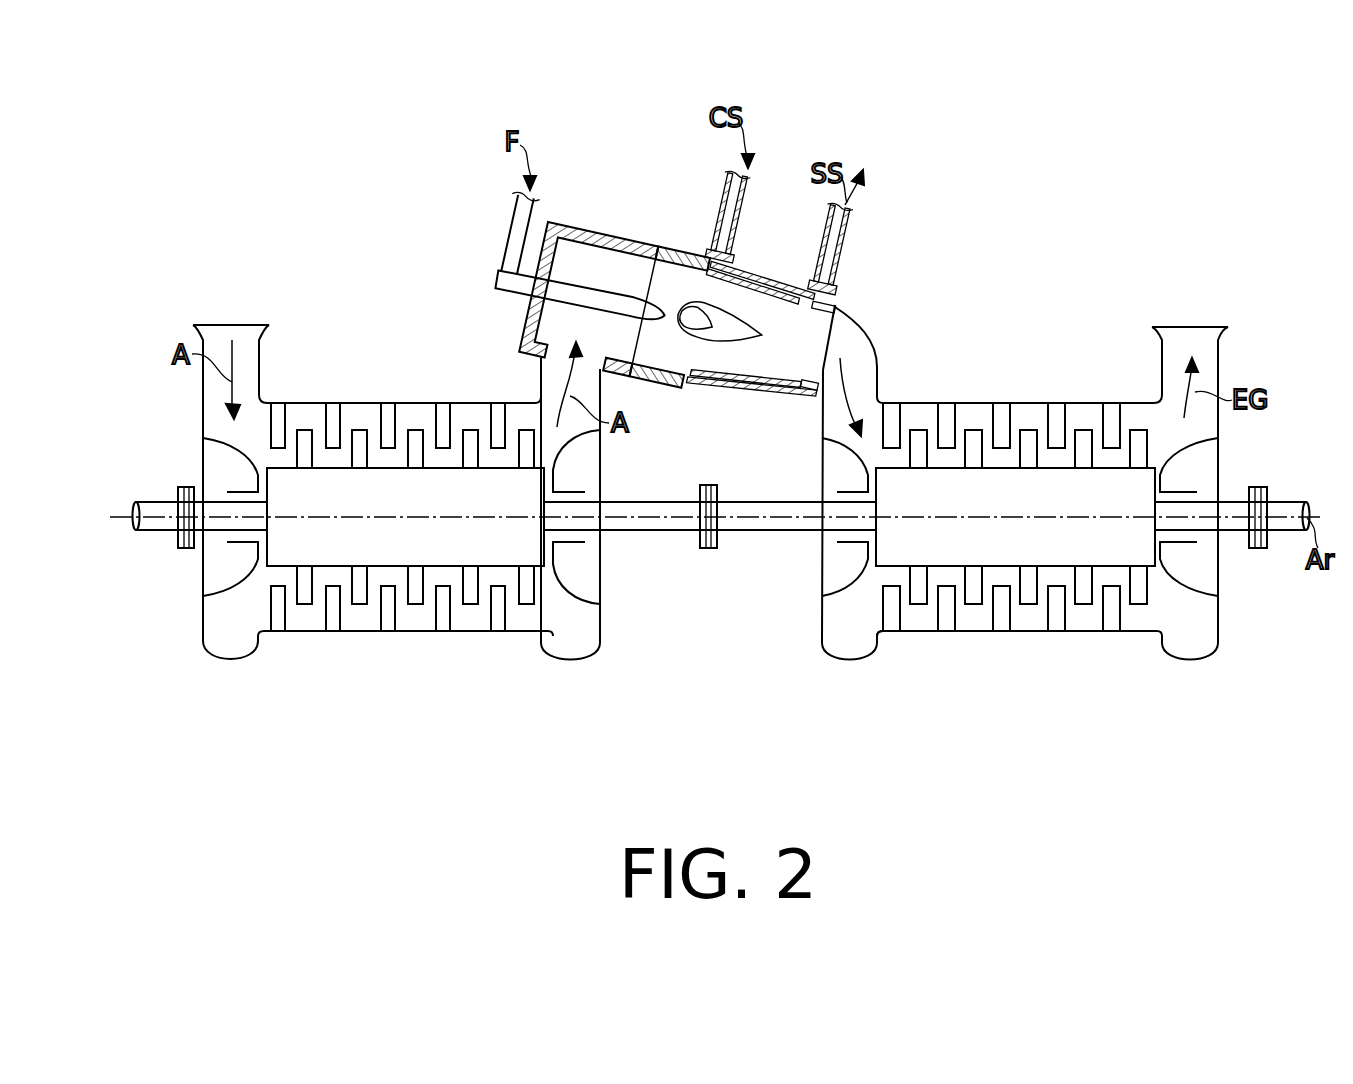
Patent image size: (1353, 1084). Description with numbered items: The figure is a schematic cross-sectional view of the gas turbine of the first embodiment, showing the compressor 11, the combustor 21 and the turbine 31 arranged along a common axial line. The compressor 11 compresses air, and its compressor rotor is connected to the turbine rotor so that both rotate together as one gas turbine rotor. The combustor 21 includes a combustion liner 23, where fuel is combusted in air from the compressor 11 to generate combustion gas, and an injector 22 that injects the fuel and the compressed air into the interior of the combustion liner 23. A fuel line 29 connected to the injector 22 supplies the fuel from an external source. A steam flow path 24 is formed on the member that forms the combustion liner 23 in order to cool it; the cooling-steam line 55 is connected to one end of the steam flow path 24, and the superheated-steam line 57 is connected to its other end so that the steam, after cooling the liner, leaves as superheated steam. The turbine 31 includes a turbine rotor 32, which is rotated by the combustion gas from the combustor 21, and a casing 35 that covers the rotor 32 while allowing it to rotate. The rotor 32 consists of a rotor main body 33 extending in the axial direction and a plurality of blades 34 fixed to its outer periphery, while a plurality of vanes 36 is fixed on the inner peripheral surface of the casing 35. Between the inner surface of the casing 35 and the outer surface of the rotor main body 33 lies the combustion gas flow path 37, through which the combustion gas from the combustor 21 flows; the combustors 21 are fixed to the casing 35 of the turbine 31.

The compressor 11 is at (410, 645).
The combustor 21 is at (478, 241).
The injector 22 is at (608, 230).
The combustion liner 23 is at (681, 245).
The steam flow path 24 is at (770, 283).
The fuel line 29 is at (514, 217).
The cooling-steam line 55 is at (748, 195).
The superheated-steam line 57 is at (858, 228).
The turbine 31 is at (1154, 678).
The turbine rotor 32 is at (910, 676).
The rotor main body 33 is at (1030, 545).
The blade 34 is at (918, 590).
The casing 35 is at (1015, 403).
The vane 36 is at (943, 427).
The combustion gas flow path 37 is at (1028, 423).